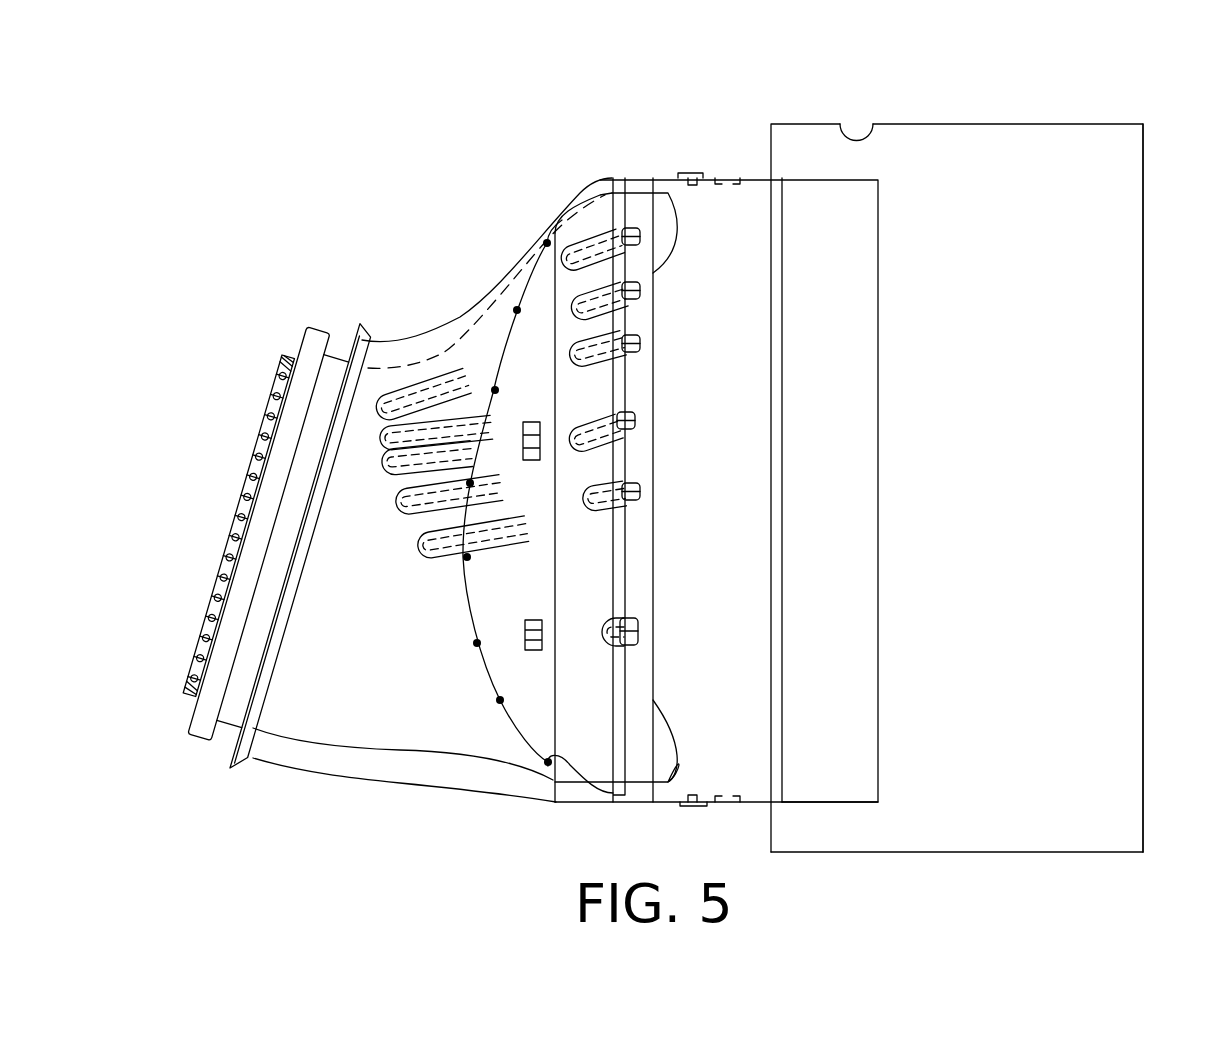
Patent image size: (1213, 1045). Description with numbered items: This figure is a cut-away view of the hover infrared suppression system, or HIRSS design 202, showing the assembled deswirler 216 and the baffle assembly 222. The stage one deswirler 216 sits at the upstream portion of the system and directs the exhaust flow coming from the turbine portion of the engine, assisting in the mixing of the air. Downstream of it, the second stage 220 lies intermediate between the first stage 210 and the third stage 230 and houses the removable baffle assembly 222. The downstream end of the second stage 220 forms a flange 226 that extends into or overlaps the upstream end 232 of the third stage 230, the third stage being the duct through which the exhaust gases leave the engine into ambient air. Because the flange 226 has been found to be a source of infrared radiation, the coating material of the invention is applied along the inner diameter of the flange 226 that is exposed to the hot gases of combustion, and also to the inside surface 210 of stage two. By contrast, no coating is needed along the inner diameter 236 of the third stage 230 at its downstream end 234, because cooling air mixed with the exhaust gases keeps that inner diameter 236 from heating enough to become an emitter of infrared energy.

The HIRSS design 202 is at (688, 67).
The first stage 210 is at (258, 766).
The stage one deswirler 216 is at (283, 360).
The second stage 220 is at (665, 178).
The baffle assembly 222 is at (605, 212).
The flange 226 is at (823, 801).
The third stage 230 is at (1075, 123).
The upstream end of the third stage 232 is at (873, 124).
The downstream end of the third stage 234 is at (995, 851).
The inner diameter of the third stage 236 is at (1115, 125).